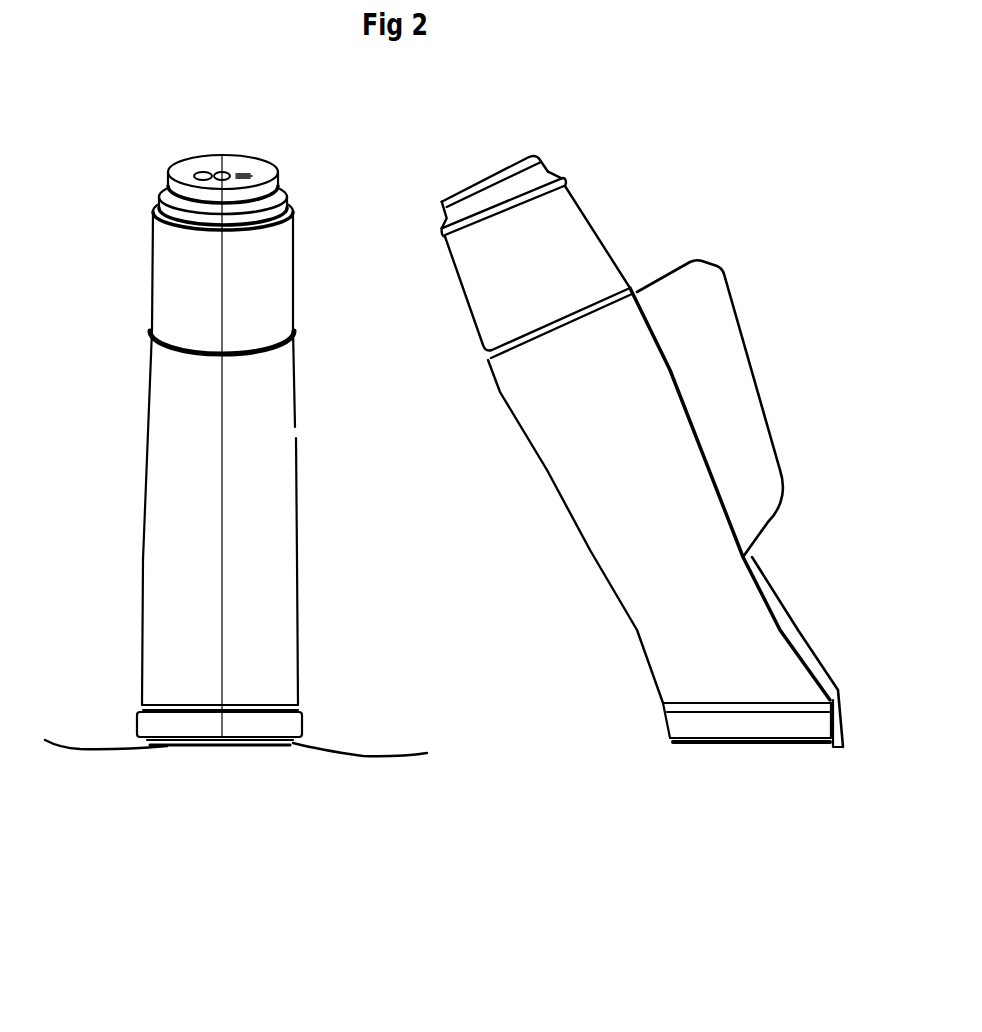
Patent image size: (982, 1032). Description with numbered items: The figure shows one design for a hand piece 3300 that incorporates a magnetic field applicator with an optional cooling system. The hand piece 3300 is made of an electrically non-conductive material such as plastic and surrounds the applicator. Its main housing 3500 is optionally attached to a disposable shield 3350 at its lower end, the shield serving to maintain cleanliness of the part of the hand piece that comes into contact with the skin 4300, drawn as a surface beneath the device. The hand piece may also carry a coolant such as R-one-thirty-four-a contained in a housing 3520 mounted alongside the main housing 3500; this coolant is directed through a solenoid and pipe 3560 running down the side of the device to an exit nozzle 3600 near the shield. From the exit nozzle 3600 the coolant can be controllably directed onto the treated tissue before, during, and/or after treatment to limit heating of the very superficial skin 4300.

The hand piece 3300 is at (337, 495).
The disposable shield 3350 is at (700, 747).
The main housing 3500 is at (528, 375).
The housing 3520 is at (722, 343).
The solenoid and pipe 3560 is at (777, 602).
The exit nozzle 3600 is at (833, 742).
The skin 4300 is at (261, 772).